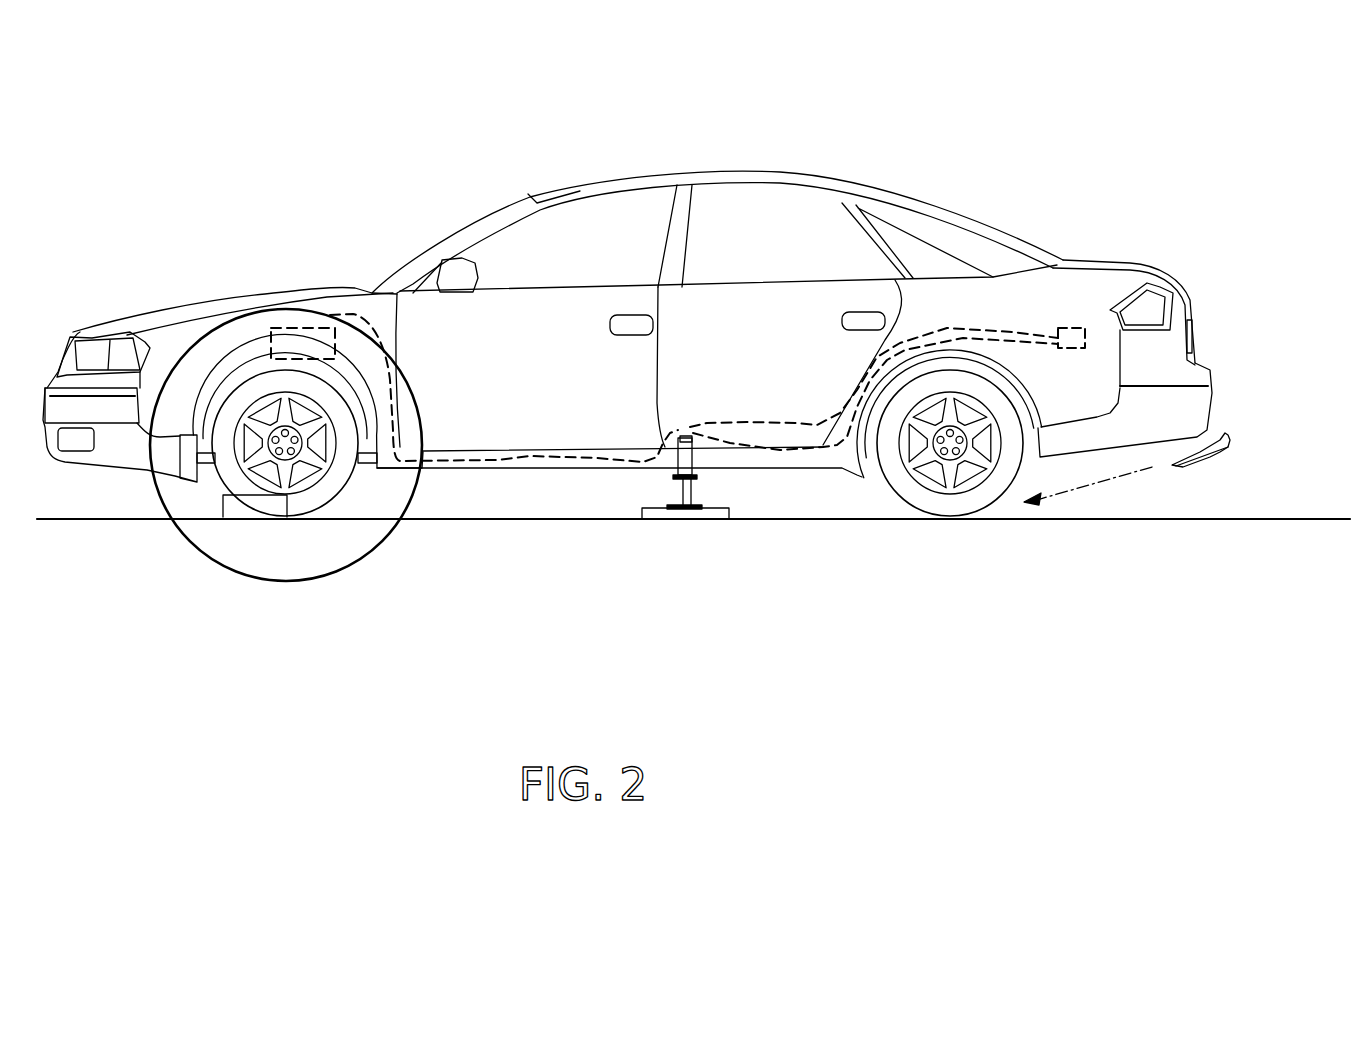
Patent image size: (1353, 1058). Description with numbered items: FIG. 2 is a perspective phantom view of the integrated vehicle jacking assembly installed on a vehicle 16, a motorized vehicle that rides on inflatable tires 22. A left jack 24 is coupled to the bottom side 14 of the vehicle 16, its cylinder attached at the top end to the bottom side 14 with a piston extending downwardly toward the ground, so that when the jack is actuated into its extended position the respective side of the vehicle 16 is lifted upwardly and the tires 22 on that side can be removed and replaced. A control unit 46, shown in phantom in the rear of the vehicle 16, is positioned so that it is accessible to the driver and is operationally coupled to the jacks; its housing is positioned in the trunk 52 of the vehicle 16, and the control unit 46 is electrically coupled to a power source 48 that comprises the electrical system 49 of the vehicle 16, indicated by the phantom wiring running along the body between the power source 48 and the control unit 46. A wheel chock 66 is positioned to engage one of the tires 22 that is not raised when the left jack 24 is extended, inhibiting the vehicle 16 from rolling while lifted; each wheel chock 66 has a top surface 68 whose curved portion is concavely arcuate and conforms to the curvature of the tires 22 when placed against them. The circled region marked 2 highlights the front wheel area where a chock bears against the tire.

The sensor arrangement detail region 2 is at (260, 312).
The bottom side 14 is at (527, 468).
The vehicle 16 is at (433, 243).
The tires 22 is at (332, 493).
The left jack 24 is at (700, 482).
The control unit 46 is at (1078, 327).
The power source 48 is at (270, 358).
The electrical system 49 is at (320, 318).
The trunk 52 is at (1131, 268).
The wheel chocks 66 is at (1226, 435).
The top surface 68 is at (223, 505).